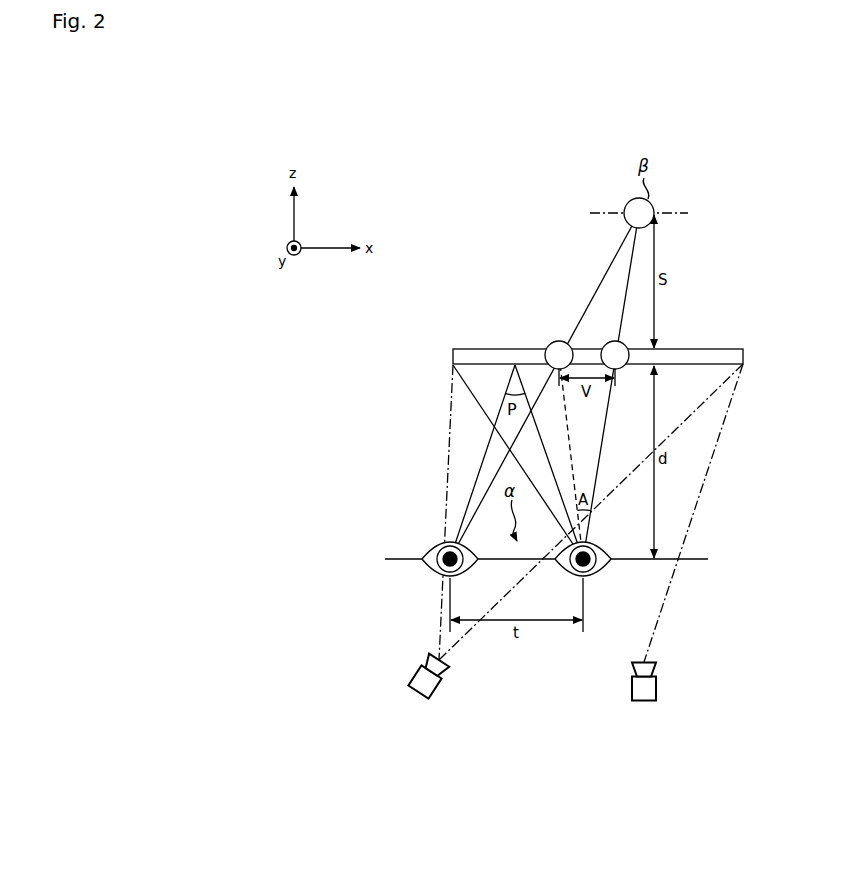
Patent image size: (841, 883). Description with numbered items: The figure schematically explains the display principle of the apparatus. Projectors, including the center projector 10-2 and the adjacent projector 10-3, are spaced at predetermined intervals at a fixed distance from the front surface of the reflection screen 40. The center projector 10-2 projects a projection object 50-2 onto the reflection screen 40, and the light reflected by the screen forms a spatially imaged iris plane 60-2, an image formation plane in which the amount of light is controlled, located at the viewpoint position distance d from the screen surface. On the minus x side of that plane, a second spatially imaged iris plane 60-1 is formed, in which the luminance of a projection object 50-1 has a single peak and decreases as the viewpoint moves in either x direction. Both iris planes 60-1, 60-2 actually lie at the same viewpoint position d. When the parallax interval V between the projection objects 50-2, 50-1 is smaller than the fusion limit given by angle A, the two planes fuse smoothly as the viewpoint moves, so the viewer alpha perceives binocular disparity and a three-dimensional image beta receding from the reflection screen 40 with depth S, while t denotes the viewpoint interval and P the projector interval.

The reflection screen 40 is at (745, 358).
The projection object 50-1 is at (558, 341).
The projection object 50-2 is at (617, 369).
The spatially imaged iris plane 60-1 is at (393, 562).
The spatially imaged iris plane 60-2 is at (630, 562).
The projector 10-2 is at (646, 702).
The projector 10-3 is at (417, 700).